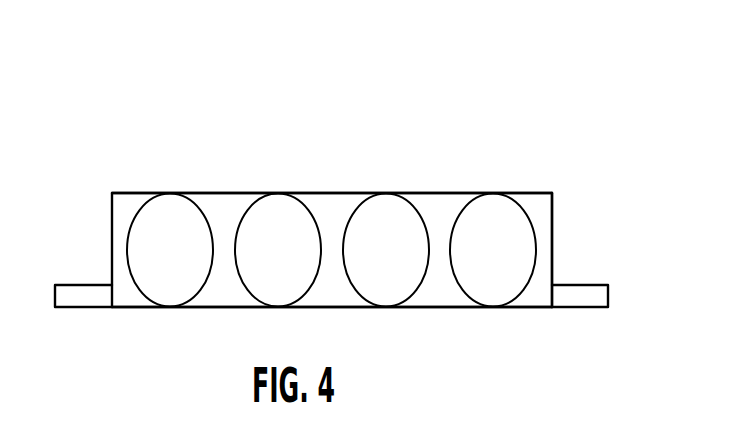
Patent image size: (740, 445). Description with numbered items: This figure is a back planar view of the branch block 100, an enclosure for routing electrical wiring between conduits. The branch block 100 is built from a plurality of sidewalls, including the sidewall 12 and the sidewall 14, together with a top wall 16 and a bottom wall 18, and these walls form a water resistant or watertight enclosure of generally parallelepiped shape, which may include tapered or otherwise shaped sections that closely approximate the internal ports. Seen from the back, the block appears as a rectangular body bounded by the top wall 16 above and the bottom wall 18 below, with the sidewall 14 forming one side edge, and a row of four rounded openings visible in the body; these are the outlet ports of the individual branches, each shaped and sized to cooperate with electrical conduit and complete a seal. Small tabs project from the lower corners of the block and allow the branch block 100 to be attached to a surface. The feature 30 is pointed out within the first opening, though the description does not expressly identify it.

The branch block 100 is at (285, 137).
The sidewall 12 is at (323, 290).
The sidewall 14 is at (553, 267).
The top wall 16 is at (457, 193).
The bottom wall 18 is at (437, 308).
The cell wall 30 is at (153, 273).